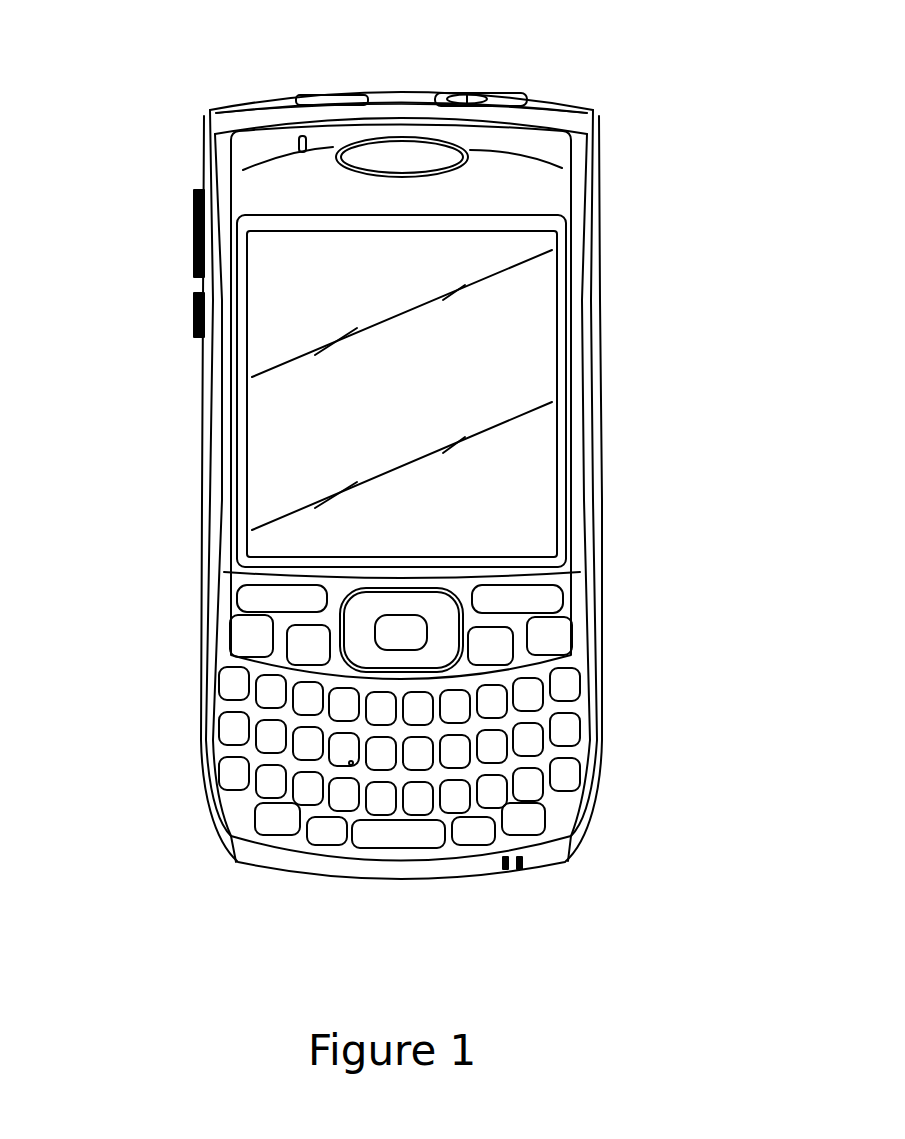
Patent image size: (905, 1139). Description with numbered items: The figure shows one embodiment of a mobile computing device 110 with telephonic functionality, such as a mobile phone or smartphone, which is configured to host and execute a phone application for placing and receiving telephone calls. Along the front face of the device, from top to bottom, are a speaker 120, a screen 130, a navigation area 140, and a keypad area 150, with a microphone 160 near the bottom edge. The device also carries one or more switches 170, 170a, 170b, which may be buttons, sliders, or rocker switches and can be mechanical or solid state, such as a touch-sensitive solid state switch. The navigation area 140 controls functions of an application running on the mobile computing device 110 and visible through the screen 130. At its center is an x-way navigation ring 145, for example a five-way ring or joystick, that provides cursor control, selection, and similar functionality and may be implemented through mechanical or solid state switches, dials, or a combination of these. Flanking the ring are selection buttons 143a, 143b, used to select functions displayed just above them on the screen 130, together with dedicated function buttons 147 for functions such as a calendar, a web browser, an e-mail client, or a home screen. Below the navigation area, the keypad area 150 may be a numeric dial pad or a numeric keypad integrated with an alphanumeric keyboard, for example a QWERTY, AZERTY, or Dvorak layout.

The mobile computing device 110 is at (600, 119).
The speaker 120 is at (398, 148).
The screen 130 is at (530, 356).
The navigation area 140 is at (431, 589).
The selection button 143a is at (245, 592).
The selection button 143b is at (537, 597).
The navigation ring 145 is at (438, 612).
The dedicated function buttons 147 is at (305, 647).
The keypad area 150 is at (612, 675).
The microphone 160 is at (521, 880).
The switch 170 is at (470, 92).
The switch 170a is at (192, 222).
The switch 170b is at (192, 318).